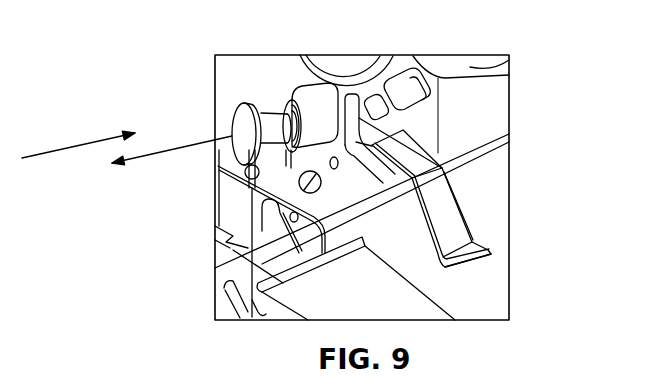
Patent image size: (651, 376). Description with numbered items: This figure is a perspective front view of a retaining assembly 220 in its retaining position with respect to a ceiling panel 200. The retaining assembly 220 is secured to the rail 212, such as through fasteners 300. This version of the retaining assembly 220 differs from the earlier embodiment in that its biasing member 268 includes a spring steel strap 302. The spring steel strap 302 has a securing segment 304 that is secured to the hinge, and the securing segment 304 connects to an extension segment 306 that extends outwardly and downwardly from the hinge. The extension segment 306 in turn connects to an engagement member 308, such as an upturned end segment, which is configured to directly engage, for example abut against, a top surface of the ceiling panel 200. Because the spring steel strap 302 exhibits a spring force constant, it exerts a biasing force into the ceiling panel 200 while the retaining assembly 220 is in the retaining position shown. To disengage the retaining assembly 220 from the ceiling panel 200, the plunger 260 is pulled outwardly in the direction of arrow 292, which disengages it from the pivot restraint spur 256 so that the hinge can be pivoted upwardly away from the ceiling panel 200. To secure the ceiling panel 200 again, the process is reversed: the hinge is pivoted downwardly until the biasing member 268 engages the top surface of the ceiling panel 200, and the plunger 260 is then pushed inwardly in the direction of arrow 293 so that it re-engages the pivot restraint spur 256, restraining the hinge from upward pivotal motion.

The ceiling panel 200 is at (495, 302).
The rail 212 is at (498, 72).
The retaining assembly 220 is at (297, 81).
The pivot restraint spur 256 is at (347, 98).
The plunger 260 is at (248, 130).
The biasing member 268 is at (455, 192).
The arrow 292 is at (165, 155).
The arrow 293 is at (60, 147).
The fasteners 300 is at (293, 216).
The spring steel strap 302 is at (464, 212).
The securing segment 304 is at (447, 156).
The extension segment 306 is at (252, 292).
The engagement member 308 is at (456, 266).